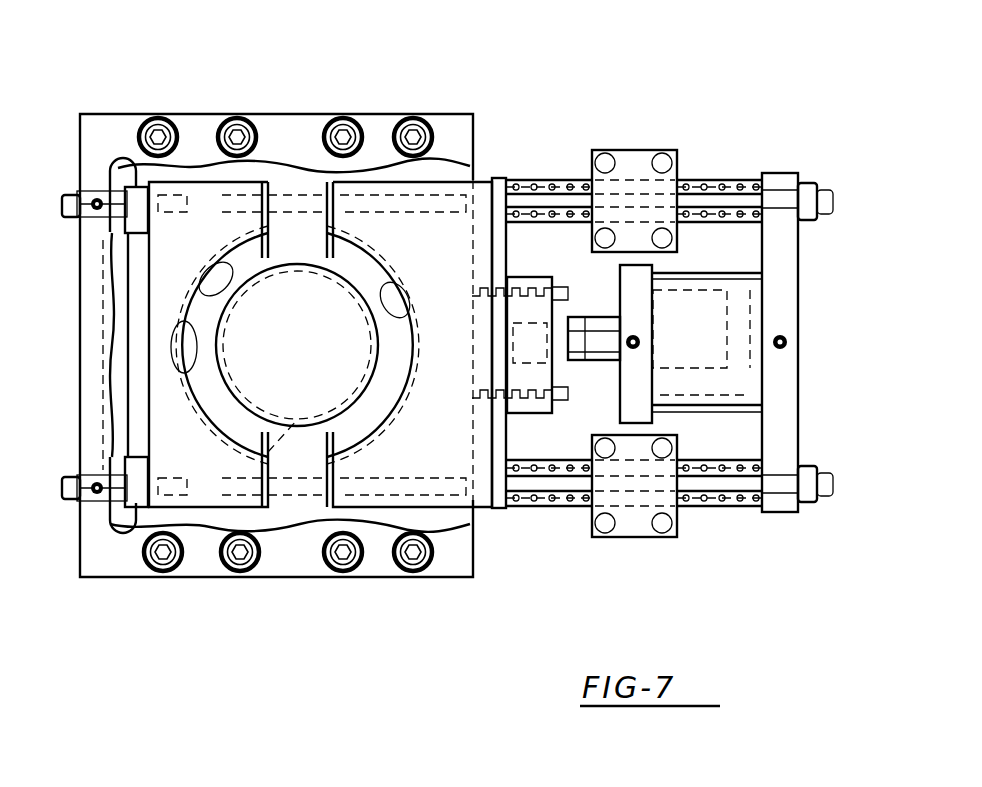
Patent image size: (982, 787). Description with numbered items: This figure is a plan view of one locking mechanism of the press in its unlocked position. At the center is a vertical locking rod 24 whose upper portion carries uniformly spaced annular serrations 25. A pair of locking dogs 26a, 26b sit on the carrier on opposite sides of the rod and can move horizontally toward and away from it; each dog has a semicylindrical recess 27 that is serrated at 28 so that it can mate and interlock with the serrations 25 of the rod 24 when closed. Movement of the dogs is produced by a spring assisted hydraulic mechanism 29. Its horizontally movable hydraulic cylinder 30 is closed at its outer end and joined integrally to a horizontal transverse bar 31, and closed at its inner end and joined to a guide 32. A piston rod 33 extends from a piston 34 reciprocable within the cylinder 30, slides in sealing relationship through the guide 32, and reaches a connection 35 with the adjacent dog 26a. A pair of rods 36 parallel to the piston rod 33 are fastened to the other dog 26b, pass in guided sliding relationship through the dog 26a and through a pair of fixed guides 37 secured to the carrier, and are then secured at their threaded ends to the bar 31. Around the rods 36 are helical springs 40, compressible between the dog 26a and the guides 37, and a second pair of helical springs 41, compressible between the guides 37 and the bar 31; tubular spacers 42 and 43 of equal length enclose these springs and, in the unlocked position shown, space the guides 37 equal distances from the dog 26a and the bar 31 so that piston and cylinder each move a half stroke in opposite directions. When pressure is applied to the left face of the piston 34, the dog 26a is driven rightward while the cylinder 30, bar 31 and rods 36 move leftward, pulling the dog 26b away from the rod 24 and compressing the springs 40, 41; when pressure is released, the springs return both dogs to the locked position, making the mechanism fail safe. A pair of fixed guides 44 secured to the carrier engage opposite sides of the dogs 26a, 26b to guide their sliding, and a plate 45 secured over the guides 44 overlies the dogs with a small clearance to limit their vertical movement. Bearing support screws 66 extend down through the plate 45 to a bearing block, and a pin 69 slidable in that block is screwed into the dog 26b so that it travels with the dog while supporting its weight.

The locking rod 24 is at (325, 365).
The serrations 25 is at (268, 455).
The locking dog 26a is at (455, 445).
The locking dog 26b is at (185, 435).
The semicylindrical recesses 27 is at (407, 318).
The serrations 28 is at (233, 265).
The spring assisted hydraulic mechanism 29 is at (675, 86).
The hydraulic cylinder 30 is at (730, 275).
The transverse bar 31 is at (781, 401).
The guide 32 is at (645, 280).
The piston rod 33 is at (608, 350).
The piston 34 is at (684, 418).
The connection 35 is at (568, 293).
The rods 36 is at (300, 198).
The fixed guides 37 is at (598, 150).
The helical springs 40 is at (540, 180).
The helical springs 41 is at (730, 175).
The tubular spacer 42 is at (517, 178).
The tubular spacer 43 is at (693, 165).
The fixed guides 44 is at (467, 160).
The plate 45 is at (107, 550).
The bearing support screw 66 is at (91, 195).
The pin 69 is at (129, 162).